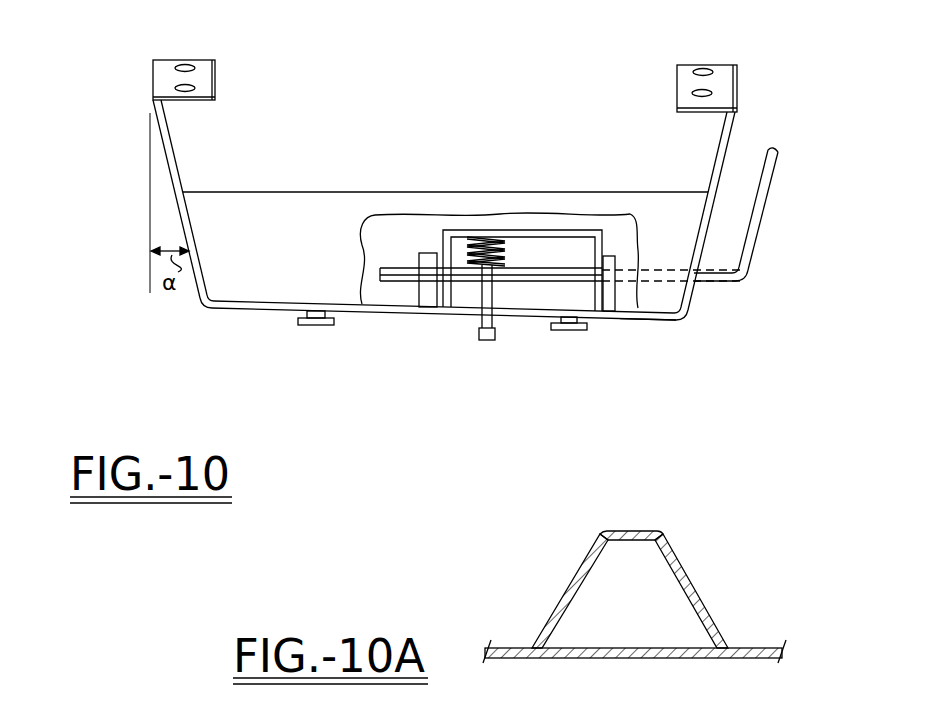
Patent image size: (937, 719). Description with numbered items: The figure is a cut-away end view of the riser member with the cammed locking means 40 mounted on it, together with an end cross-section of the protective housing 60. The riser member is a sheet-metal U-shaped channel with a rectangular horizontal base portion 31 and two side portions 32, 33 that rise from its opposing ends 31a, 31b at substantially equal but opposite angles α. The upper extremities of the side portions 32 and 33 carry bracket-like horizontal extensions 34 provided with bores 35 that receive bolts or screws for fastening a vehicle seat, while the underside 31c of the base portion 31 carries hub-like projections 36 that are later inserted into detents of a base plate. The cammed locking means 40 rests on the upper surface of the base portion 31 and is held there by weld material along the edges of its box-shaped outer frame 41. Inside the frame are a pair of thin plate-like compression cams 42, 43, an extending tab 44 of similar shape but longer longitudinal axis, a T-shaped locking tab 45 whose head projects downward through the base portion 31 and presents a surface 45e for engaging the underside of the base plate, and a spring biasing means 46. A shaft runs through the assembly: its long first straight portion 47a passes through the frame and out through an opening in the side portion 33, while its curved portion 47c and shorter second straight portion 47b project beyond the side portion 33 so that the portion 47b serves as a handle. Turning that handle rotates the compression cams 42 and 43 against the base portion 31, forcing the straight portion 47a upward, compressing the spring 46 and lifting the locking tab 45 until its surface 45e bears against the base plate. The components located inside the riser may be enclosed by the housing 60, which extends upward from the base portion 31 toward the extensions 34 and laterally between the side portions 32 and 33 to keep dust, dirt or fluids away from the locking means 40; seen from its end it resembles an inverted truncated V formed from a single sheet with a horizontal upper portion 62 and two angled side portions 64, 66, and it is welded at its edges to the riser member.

In FIG. 10, the base portion 31 is at (405, 318).
In FIG. 10A, the base portion 31 is at (688, 670).
In FIG. 10, the end of base portion 31a is at (203, 305).
In FIG. 10, the end of base portion 31b is at (685, 318).
In FIG. 10, the underside of base portion 31c is at (648, 321).
In FIG. 10, the side portion 32 is at (177, 188).
In FIG. 10, the side portion 33 is at (736, 140).
In FIG. 10, the bracket-like horizontal extension 34 is at (204, 62).
In FIG. 10, the bores 35 is at (183, 64).
In FIG. 10, the hub-like projections 36 is at (306, 326).
In FIG. 10, the cammed locking means 40 is at (520, 265).
In FIG. 10, the outer frame 41 is at (575, 228).
In FIG. 10, the compression cam 42 is at (422, 291).
In FIG. 10, the compression cam 43 is at (611, 262).
In FIG. 10, the extending tab 44 is at (437, 253).
In FIG. 10, the T-shaped locking tab 45 is at (484, 336).
In FIG. 10, the surface of head portion 45e is at (478, 330).
In FIG. 10, the spring biasing means 46 is at (468, 247).
In FIG. 10, the first straight portion of shaft 47a is at (390, 268).
In FIG. 10, the second straight portion of shaft 47b is at (776, 183).
In FIG. 10, the curved portion of shaft 47c is at (742, 280).
In FIG. 10, the housing 60 is at (262, 186).
In FIG. 10A, the housing 60 is at (612, 564).
In FIG. 10A, the horizontal upper portion 62 is at (648, 532).
In FIG. 10A, the angled side portion 64 is at (565, 585).
In FIG. 10A, the angled side portion 66 is at (697, 588).